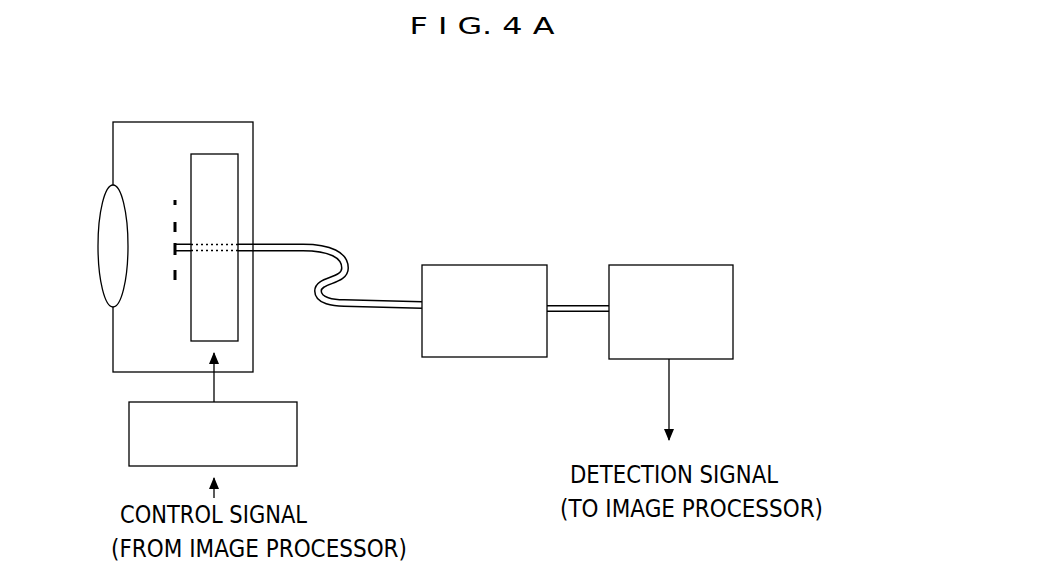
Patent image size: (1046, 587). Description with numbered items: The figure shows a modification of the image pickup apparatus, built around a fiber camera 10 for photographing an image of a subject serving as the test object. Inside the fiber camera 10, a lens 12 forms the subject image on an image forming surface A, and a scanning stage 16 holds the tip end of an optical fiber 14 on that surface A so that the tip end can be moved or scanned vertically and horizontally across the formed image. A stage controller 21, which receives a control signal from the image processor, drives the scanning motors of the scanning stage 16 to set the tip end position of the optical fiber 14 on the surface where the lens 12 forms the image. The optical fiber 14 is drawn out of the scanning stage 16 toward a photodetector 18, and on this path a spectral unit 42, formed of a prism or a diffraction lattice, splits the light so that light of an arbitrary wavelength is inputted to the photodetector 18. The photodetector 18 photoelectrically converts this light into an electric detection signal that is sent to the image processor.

The fiber camera 10 is at (203, 122).
The lens 12 is at (105, 302).
The optical fiber 14 is at (325, 249).
The scanning stage 16 is at (232, 177).
The photodetector 18 is at (694, 265).
The stage controller 21 is at (285, 402).
The spectral unit 42 is at (534, 265).
The image forming surface A is at (176, 198).